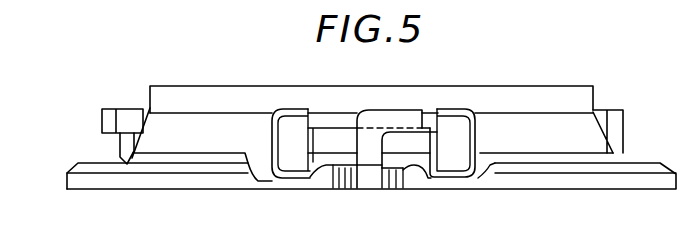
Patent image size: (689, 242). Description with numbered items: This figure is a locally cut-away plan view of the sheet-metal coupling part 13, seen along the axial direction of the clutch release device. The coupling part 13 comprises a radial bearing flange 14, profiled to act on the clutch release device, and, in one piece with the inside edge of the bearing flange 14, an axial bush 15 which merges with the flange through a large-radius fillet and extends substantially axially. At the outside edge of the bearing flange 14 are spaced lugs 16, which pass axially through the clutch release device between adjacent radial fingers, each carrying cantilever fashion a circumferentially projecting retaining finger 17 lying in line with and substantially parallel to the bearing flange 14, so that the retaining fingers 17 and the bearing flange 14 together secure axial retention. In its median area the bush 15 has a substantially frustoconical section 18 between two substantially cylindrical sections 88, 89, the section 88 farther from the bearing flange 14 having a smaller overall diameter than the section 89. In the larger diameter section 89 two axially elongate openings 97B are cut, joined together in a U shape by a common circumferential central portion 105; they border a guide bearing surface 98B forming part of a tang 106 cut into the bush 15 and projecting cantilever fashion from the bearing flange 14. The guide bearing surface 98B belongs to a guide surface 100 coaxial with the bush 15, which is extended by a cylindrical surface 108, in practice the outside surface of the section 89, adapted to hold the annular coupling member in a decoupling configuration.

The coupling part 13 is at (604, 98).
The bearing flange 14 is at (623, 194).
The bush 15 is at (231, 82).
The lugs 16 is at (120, 153).
The retaining finger 17 is at (110, 109).
The frustoconical section 18 is at (550, 145).
The cylindrical section 88 is at (551, 98).
The cylindrical section 89 is at (583, 160).
The openings 97B is at (285, 164).
The guide bearing surface 98B is at (427, 133).
The guide surface 100 is at (229, 149).
The central portion 105 is at (350, 113).
The tang 106 is at (327, 130).
The cylindrical surface 108 is at (148, 156).